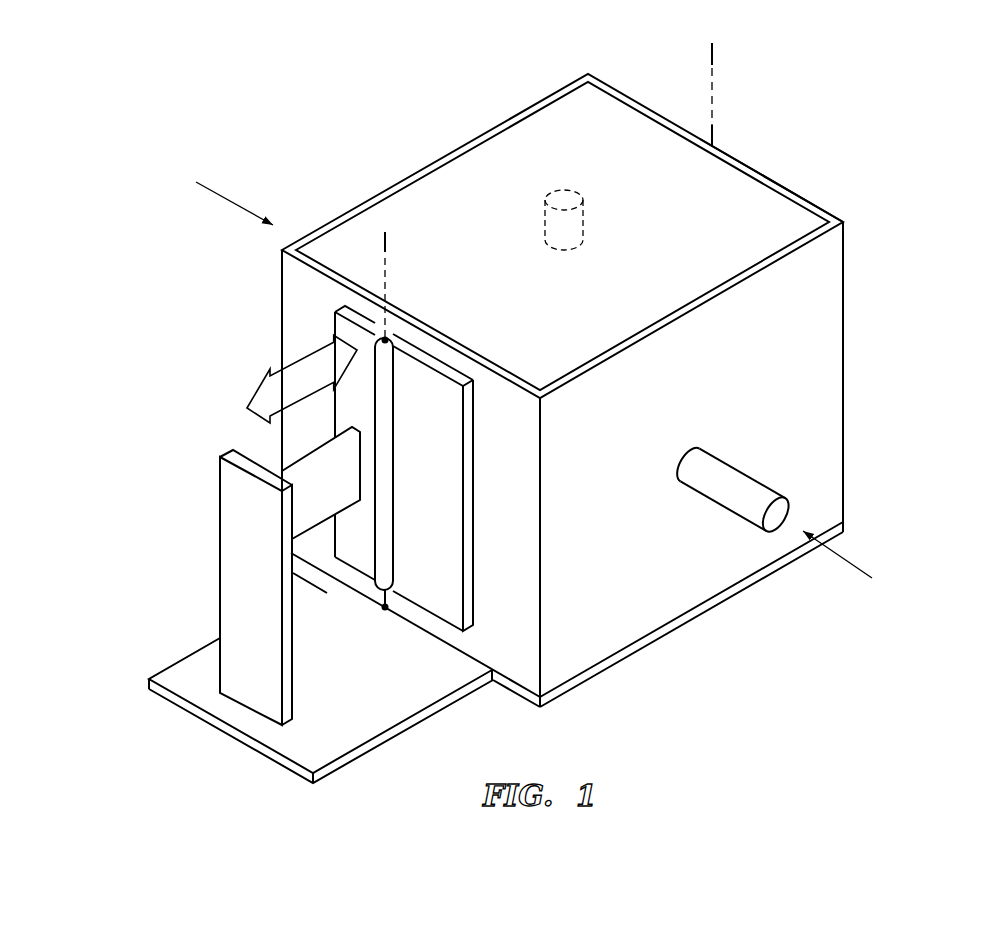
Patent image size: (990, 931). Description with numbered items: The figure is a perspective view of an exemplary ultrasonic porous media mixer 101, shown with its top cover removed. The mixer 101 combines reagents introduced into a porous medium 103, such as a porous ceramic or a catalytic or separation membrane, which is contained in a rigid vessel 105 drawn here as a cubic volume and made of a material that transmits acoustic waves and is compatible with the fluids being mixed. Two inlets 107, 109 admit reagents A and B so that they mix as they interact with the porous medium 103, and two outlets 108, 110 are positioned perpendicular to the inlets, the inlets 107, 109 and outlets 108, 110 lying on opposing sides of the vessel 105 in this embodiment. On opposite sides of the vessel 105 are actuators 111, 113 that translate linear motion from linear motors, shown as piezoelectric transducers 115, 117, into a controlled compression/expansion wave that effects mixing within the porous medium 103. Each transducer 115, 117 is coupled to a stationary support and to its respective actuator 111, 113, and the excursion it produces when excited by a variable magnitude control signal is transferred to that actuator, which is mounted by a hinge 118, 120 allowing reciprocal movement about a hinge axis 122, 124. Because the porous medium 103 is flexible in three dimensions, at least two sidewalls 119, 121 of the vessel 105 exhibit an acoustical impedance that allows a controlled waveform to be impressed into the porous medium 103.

The mixer 101 is at (291, 150).
The porous medium 103 is at (582, 157).
The vessel 105 is at (822, 375).
The inlet 107 is at (262, 266).
The outlet 108 is at (647, 648).
The inlet 109 is at (710, 499).
The outlet 110 is at (545, 218).
The actuator 111 is at (340, 325).
The actuator 113 is at (820, 165).
The piezoelectric transducer 115 is at (323, 480).
The piezoelectric transducer 117 is at (789, 176).
The hinge 118 is at (379, 609).
The sidewall 119 is at (526, 652).
The hinge 120 is at (727, 139).
The sidewall 121 is at (860, 317).
The hinge axis 122 is at (388, 250).
The hinge axis 124 is at (707, 62).